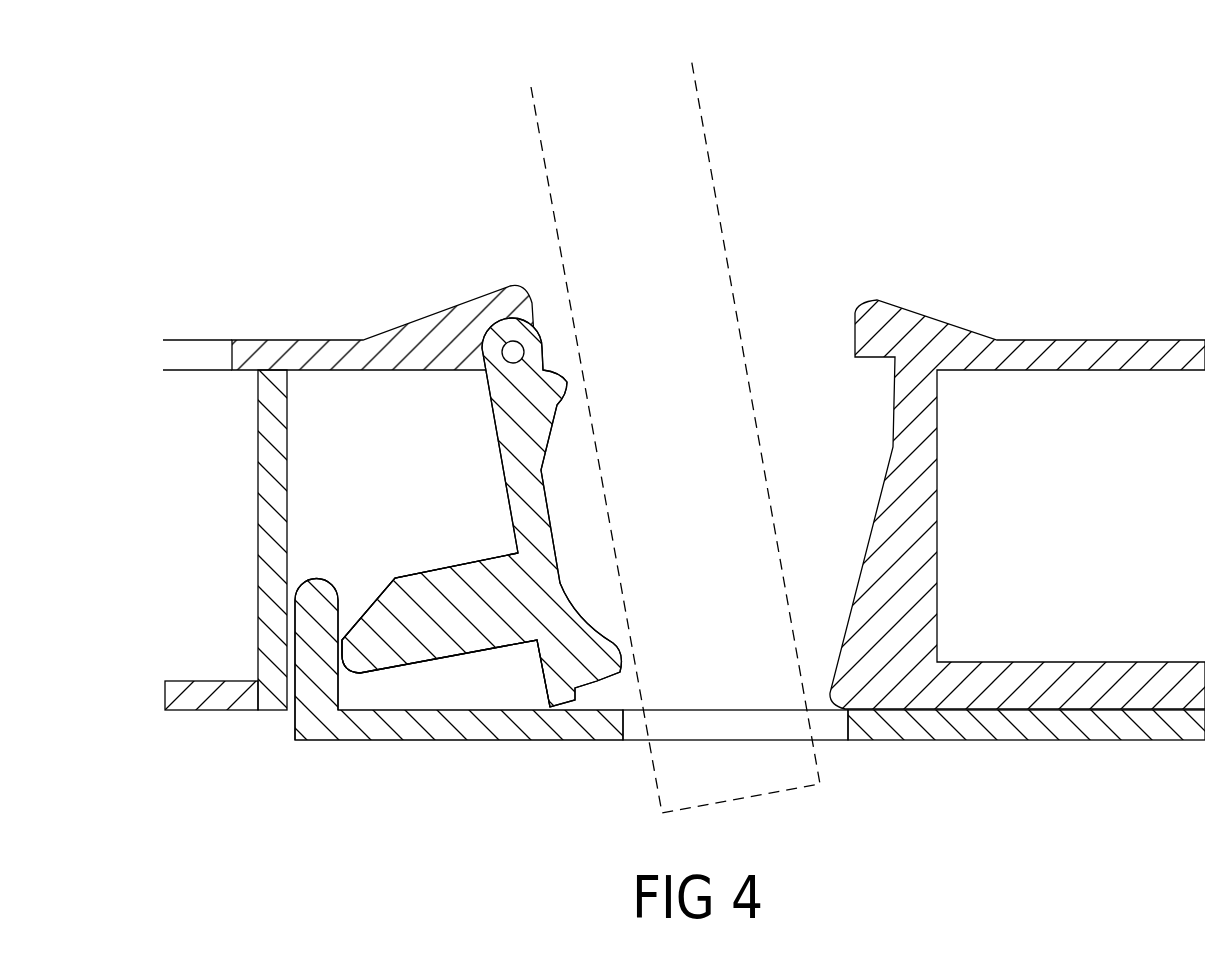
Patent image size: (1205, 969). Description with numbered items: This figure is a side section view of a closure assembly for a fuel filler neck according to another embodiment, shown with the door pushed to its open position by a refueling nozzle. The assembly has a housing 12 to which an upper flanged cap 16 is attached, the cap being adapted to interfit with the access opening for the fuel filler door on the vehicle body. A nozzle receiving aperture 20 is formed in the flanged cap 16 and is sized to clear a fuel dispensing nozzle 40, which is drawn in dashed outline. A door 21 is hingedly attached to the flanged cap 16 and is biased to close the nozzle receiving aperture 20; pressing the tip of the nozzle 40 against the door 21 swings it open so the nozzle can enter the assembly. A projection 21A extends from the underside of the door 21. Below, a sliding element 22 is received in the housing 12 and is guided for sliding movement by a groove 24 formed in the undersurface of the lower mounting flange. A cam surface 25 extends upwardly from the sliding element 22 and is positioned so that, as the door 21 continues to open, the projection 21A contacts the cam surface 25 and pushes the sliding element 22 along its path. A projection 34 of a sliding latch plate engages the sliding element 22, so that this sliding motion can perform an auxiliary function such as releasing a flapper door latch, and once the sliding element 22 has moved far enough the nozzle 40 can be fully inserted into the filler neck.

The housing 12 is at (267, 545).
The flanged cap 16 is at (320, 348).
The nozzle receiving aperture 20 is at (804, 322).
The door 21 is at (517, 402).
The projection 21A is at (456, 590).
The sliding element 22 is at (485, 727).
The groove 24 is at (273, 710).
The cam surface 25 is at (315, 628).
The projection 34 is at (832, 727).
The fuel dispensing nozzle 40 is at (707, 145).